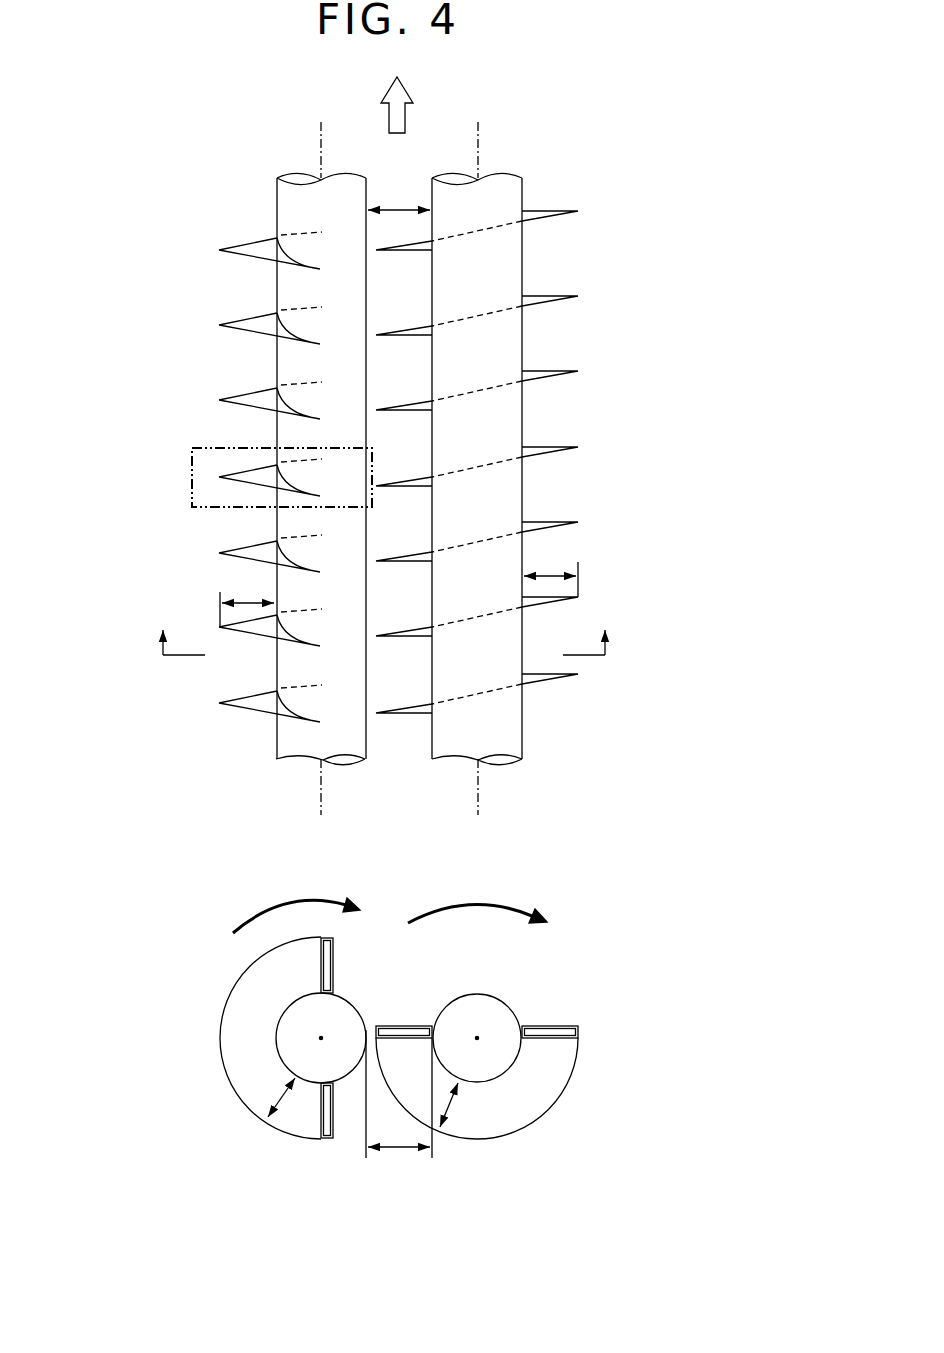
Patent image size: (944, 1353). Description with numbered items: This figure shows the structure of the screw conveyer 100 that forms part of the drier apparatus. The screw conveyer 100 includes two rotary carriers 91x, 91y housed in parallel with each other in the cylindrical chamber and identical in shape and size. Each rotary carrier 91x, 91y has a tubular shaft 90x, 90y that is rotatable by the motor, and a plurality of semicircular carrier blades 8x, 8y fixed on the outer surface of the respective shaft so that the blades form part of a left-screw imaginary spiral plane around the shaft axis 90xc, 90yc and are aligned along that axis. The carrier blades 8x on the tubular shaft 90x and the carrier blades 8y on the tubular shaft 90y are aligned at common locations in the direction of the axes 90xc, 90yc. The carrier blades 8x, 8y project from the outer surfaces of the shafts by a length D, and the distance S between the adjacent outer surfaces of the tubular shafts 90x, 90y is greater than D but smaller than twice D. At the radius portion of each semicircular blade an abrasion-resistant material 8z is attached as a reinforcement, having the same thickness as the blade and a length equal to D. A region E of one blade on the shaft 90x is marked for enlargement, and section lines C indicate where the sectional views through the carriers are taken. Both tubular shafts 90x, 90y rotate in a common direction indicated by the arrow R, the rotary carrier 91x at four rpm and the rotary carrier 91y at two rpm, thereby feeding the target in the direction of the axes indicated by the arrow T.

The screw conveyer 100 is at (190, 240).
The rotary carrier 91x is at (217, 377).
The rotary carrier 91y is at (562, 403).
The tubular shaft 90x is at (272, 288).
The tubular shaft 90y is at (512, 258).
The axis 90xc is at (321, 140).
The axis 90yc is at (478, 140).
The carrier blades 8x is at (257, 335).
The carrier blades 8y is at (546, 304).
The material having a resistance to abrasion 8z is at (333, 953).
The enlarged region E is at (190, 470).
The arrow indicating feeding direction T is at (405, 120).
The distance between outer surfaces of the tubular shafts S is at (398, 206).
The length by which the carrier blades project D is at (248, 600).
The section line C is at (384, 629).
The arrow indicating rotation direction R is at (302, 903).